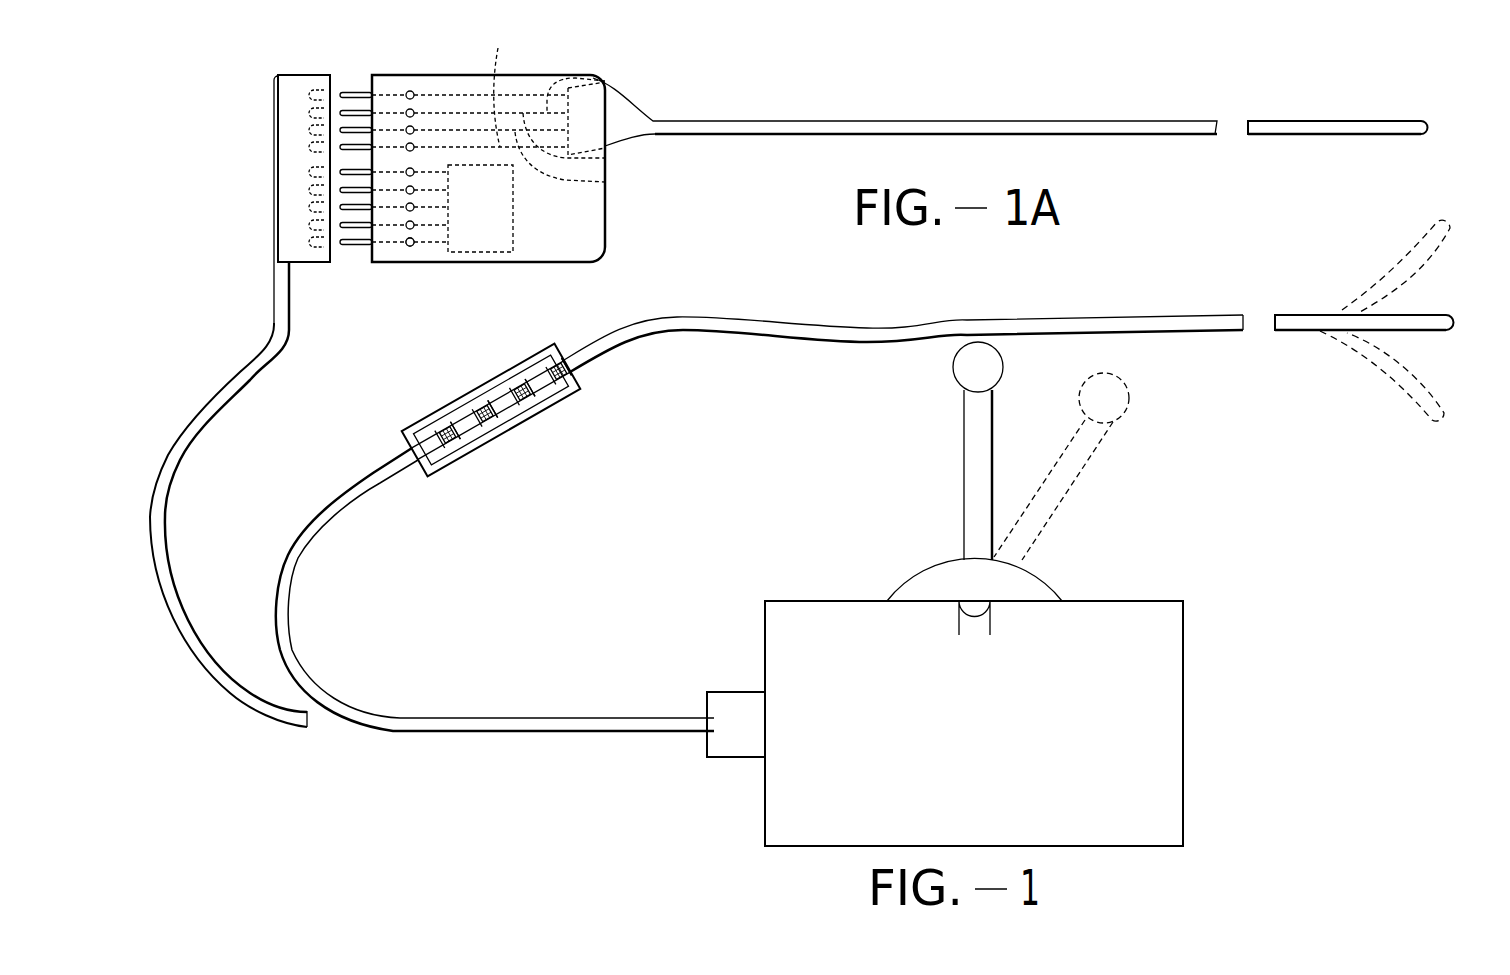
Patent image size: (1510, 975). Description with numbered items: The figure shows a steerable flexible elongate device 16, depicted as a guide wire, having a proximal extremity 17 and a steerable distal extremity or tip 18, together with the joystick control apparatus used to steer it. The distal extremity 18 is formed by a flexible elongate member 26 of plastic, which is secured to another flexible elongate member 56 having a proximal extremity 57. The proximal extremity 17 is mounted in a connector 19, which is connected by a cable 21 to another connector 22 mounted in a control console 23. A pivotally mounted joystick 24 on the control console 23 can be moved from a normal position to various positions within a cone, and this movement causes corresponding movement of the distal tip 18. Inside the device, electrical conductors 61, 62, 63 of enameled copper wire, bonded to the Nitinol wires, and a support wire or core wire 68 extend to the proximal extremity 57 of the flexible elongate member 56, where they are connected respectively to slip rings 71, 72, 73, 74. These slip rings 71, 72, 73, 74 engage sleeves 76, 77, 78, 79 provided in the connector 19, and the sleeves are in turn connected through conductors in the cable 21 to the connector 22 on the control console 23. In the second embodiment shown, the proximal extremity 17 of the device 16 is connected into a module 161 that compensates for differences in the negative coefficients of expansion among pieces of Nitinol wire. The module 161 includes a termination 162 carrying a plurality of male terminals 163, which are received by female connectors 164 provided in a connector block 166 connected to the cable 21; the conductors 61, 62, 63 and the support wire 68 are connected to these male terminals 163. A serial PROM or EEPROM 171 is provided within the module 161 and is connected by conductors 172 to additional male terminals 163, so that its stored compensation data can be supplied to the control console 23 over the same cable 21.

In FIG. 1A, the steerable flexible elongate device 16 is at (1154, 108).
In FIG. 1, the steerable flexible elongate device 16 is at (1162, 288).
In FIG. 1A, the proximal extremity 17 is at (677, 120).
In FIG. 1, the proximal extremity 17 is at (598, 312).
In FIG. 1, the distal extremity or tip 18 is at (1415, 252).
In FIG. 1, the connector 19 is at (472, 395).
In FIG. 1A, the cable 21 is at (166, 545).
In FIG. 1, the cable 21 is at (292, 576).
In FIG. 1, the connector 22 is at (750, 757).
In FIG. 1, the control console 23 is at (1163, 782).
In FIG. 1, the joystick 24 is at (963, 478).
In FIG. 1, the flexible elongate member 26 is at (1330, 312).
In FIG. 1, the flexible elongate member 56 is at (860, 326).
In FIG. 1, the proximal extremity 57 is at (625, 343).
In FIG. 1A, the electrical conductor 61 is at (608, 88).
In FIG. 1A, the electrical conductor 62 is at (605, 158).
In FIG. 1A, the electrical conductor 63 is at (605, 182).
In FIG. 1A, the support wire or core wire 68 is at (505, 93).
In FIG. 1, the slip ring 71 is at (556, 366).
In FIG. 1, the slip ring 72 is at (517, 388).
In FIG. 1, the slip ring 73 is at (475, 410).
In FIG. 1, the slip ring 74 is at (440, 432).
In FIG. 1, the sleeve 76 is at (567, 397).
In FIG. 1, the sleeve 77 is at (537, 412).
In FIG. 1, the sleeve 78 is at (500, 433).
In FIG. 1, the sleeve 79 is at (460, 453).
In FIG. 1A, the module 161 is at (534, 62).
In FIG. 1A, the termination 162 is at (397, 85).
In FIG. 1A, the male terminals 163 is at (355, 93).
In FIG. 1A, the female connectors 164 is at (322, 87).
In FIG. 1A, the connector block 166 is at (285, 216).
In FIG. 1A, the serial PROM or EEPROM 171 is at (513, 226).
In FIG. 1A, the conductors 172 is at (428, 246).